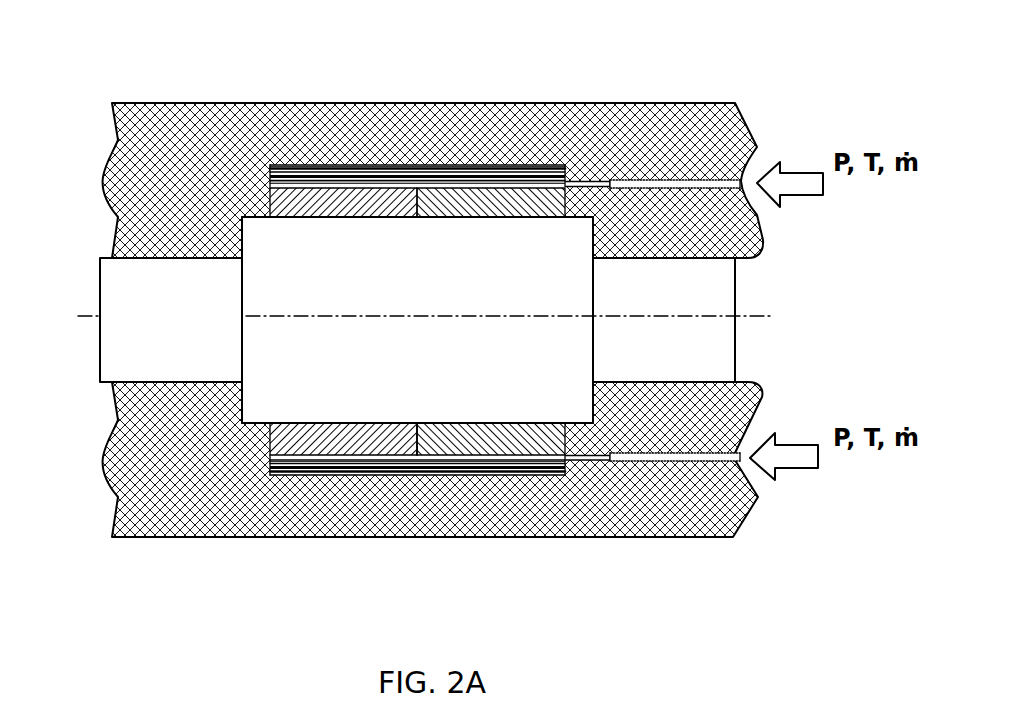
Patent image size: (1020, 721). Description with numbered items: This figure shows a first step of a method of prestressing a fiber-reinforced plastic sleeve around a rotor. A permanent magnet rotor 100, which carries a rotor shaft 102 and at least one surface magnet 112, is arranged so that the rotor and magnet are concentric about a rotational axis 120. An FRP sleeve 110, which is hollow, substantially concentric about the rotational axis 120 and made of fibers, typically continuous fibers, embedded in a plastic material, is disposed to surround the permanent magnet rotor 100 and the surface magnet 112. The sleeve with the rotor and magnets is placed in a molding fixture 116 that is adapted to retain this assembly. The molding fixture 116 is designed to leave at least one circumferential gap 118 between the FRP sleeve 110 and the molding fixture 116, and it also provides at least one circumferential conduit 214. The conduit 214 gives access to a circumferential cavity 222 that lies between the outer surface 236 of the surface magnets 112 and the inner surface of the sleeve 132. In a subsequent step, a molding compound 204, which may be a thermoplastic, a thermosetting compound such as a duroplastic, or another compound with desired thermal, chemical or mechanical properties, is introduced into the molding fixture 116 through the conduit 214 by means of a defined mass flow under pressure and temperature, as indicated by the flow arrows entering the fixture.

The permanent magnet rotor 100 is at (752, 356).
The rotor shaft 102 is at (645, 301).
The FRP sleeve 110 is at (523, 468).
The surface magnet 112 is at (452, 200).
The molding fixture 116 is at (145, 458).
The circumferential gap 118 is at (512, 165).
The rotational axis 120 is at (160, 312).
The inner surface of the sleeve 132 is at (352, 453).
The molding compound 204 is at (665, 190).
The circumferential conduit 214 is at (585, 183).
The circumferential cavity 222 is at (292, 457).
The outer surface of the surface magnets 236 is at (466, 178).